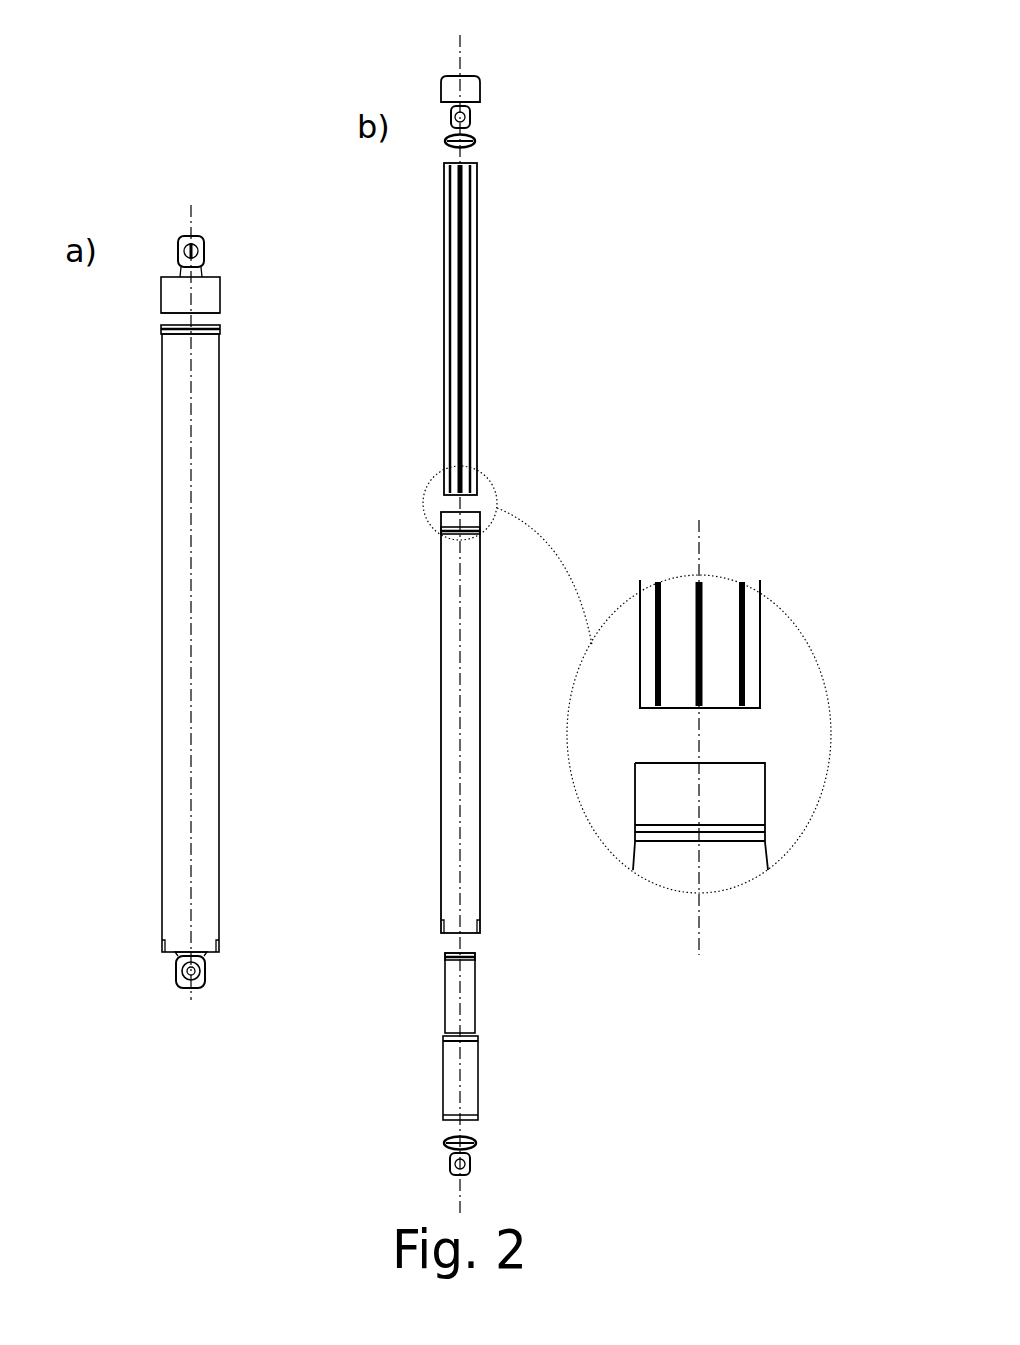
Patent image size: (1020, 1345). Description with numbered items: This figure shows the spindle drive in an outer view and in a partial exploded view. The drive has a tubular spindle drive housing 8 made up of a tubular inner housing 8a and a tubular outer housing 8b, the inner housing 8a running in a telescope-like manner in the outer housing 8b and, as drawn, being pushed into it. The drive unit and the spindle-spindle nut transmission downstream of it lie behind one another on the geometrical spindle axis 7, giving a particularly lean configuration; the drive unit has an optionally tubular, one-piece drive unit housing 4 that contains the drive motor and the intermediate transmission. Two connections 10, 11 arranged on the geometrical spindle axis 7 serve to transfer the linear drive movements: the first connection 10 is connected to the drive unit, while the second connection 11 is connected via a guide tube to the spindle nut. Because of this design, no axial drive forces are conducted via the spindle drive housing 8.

The drive unit housing 4 is at (470, 1003).
The geometrical spindle axis 7 is at (196, 214).
The spindle drive housing 8 is at (132, 513).
The inner housing 8a is at (466, 340).
The outer housing 8b is at (204, 625).
The first connection 10 is at (205, 980).
The second connection 11 is at (205, 252).